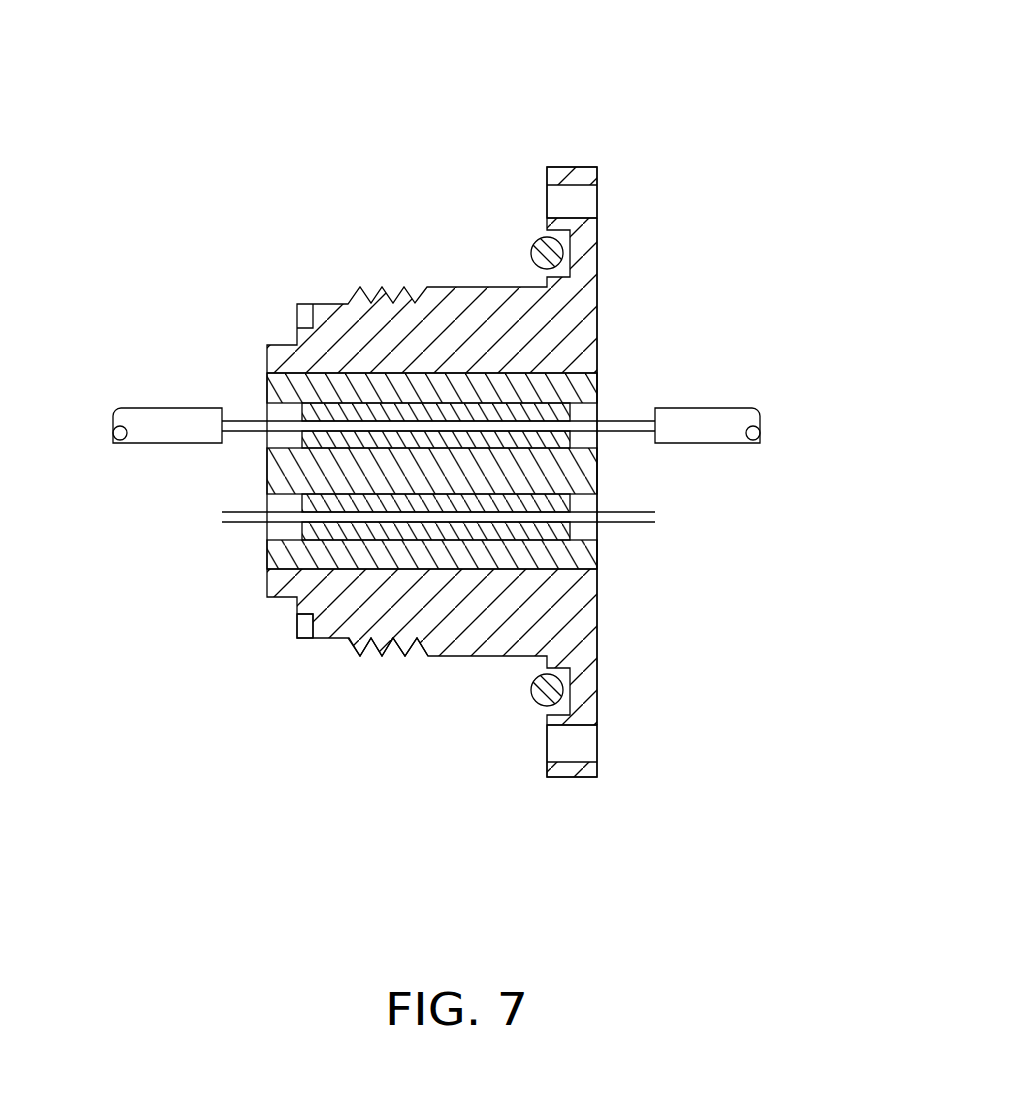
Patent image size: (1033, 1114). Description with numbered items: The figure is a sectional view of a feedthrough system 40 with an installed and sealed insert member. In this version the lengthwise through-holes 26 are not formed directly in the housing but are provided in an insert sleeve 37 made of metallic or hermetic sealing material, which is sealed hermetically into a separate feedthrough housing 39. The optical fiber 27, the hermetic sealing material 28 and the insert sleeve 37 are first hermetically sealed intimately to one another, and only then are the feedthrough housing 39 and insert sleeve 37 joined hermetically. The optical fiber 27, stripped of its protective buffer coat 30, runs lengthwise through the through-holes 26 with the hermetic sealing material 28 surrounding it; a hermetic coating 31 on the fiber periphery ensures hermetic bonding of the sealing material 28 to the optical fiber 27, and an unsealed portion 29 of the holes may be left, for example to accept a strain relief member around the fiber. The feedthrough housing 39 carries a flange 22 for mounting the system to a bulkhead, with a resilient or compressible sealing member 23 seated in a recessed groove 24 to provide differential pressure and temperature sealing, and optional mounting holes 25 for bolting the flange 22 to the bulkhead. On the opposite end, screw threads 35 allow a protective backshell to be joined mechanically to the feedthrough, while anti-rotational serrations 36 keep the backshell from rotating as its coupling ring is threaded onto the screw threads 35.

The flange 22 is at (649, 802).
The sealing member 23 is at (445, 739).
The recessed groove 24 is at (454, 203).
The mounting holes 25 is at (481, 114).
The lengthwise through-holes 26 is at (523, 238).
The optical fiber 27 is at (526, 289).
The hermetic sealing material 28 is at (565, 483).
The unsealed portion 29 is at (323, 353).
The buffer coat 30 is at (760, 339).
The hermetic coating 31 is at (135, 509).
The screw threads 35 is at (295, 714).
The anti-rotational serrations 36 is at (170, 676).
The insert sleeve 37 is at (534, 589).
The feedthrough housing 39 is at (701, 482).
The feedthrough system 40 is at (420, 472).